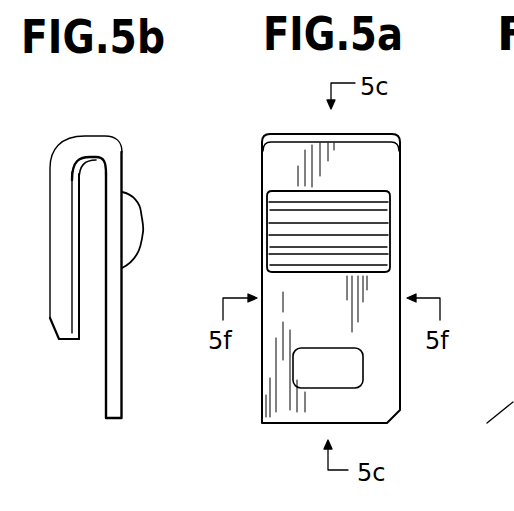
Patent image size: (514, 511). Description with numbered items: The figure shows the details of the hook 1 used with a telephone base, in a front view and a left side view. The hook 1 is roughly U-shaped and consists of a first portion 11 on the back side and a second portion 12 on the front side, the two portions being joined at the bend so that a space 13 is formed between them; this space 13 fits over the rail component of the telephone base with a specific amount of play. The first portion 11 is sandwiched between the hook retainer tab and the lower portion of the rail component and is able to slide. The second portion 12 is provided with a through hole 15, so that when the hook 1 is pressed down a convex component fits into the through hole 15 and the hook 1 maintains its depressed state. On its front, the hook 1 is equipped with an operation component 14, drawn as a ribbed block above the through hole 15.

In FIG. 5a, the hook 1 is at (395, 133).
In FIG. 5b, the first portion 11 is at (55, 336).
In FIG. 5b, the second portion 12 is at (106, 401).
In FIG. 5b, the space 13 is at (97, 172).
In FIG. 5a, the operation component 14 is at (363, 203).
In FIG. 5a, the through hole 15 is at (353, 373).